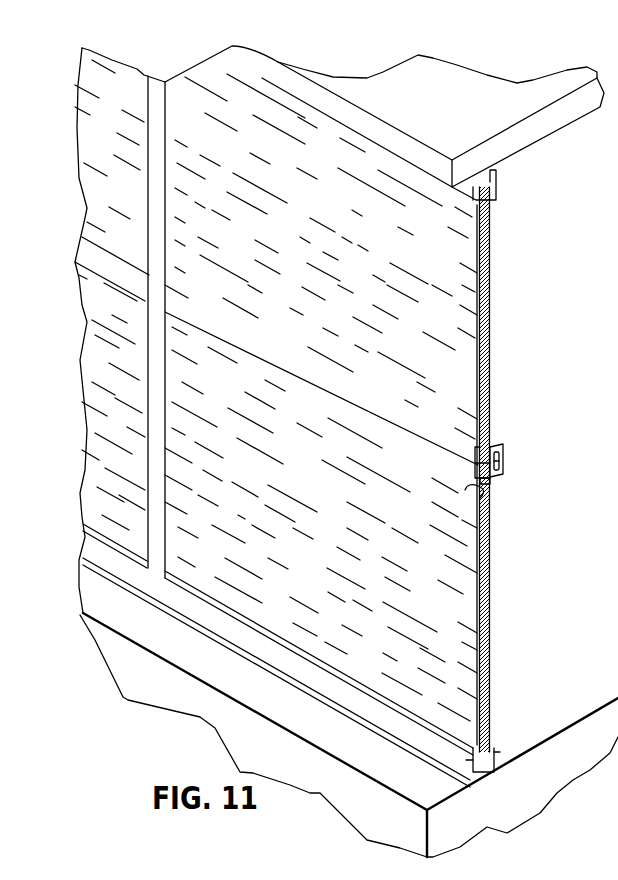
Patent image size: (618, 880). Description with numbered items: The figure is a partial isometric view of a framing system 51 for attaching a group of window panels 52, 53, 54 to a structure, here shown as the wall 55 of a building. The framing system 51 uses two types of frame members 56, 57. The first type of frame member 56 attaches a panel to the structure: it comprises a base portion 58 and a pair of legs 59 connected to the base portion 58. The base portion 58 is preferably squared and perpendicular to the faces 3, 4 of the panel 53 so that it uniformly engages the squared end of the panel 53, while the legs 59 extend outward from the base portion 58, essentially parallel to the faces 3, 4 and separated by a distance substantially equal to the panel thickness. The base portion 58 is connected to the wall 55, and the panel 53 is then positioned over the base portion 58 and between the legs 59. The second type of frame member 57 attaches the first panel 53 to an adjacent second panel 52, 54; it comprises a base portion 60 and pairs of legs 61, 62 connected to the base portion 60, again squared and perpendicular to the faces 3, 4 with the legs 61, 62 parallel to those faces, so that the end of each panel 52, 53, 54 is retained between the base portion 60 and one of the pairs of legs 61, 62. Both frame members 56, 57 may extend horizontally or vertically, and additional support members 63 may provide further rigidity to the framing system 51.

The face of the panel 3 is at (488, 237).
The face of the panel 4 is at (473, 247).
The framing system 51 is at (128, 575).
The panel 52 is at (465, 292).
The panel 53 is at (462, 582).
The panel 54 is at (93, 497).
The wall 55 is at (568, 117).
The first type of frame member 56 is at (497, 172).
The second type of frame member 57 is at (147, 343).
The base portion 58 is at (480, 771).
The legs 59 is at (495, 752).
The base portion 60 is at (502, 463).
The legs 61 is at (490, 488).
The legs 62 is at (498, 457).
The additional support members 63 is at (492, 447).